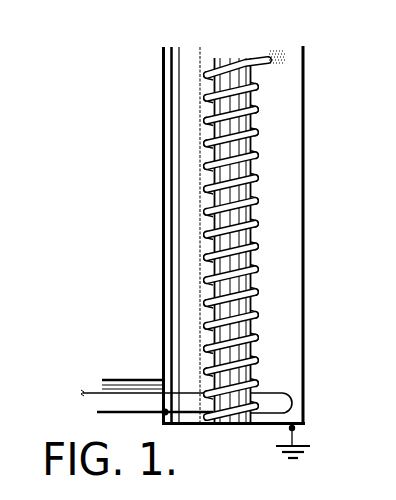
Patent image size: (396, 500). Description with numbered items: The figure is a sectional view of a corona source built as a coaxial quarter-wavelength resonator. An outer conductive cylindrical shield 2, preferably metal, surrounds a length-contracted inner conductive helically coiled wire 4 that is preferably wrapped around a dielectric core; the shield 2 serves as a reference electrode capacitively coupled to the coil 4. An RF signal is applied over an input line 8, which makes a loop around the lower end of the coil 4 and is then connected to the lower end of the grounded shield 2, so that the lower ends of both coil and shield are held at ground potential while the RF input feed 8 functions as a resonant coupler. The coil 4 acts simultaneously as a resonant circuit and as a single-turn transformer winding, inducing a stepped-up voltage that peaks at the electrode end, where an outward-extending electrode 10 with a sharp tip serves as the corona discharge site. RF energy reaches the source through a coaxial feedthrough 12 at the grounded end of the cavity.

The outer conductive cylindrical shield 2 is at (163, 160).
The inner conductive helically coiled wire 4 is at (207, 147).
The input line 8 is at (95, 392).
The electrode 10 is at (258, 58).
The coaxial feedthrough 12 is at (142, 378).